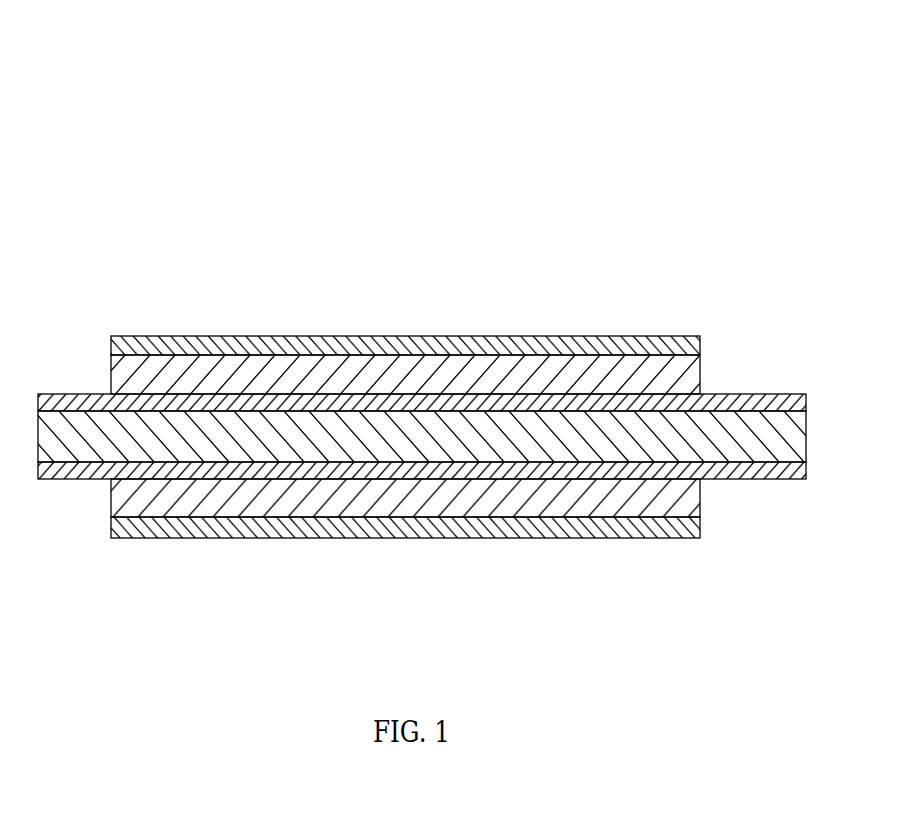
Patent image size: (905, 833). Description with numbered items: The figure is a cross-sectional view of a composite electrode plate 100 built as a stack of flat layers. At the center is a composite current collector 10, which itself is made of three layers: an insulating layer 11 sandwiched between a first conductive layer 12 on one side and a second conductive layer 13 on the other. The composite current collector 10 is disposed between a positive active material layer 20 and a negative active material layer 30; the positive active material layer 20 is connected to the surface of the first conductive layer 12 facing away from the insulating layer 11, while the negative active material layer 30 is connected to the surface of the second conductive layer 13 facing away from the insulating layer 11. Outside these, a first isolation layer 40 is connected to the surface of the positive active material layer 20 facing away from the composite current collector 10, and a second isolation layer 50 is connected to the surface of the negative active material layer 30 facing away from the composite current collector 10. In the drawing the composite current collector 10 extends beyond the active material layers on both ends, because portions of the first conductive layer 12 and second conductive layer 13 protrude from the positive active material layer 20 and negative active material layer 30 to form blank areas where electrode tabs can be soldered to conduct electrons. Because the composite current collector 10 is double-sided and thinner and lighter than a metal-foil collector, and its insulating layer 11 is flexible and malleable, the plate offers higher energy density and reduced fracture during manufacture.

The composite electrode plate 100 is at (226, 79).
The composite current collector 10 is at (422, 526).
The insulating layer 11 is at (241, 437).
The first conductive layer 12 is at (177, 403).
The second conductive layer 13 is at (125, 603).
The positive active material layer 20 is at (660, 377).
The negative active material layer 30 is at (587, 503).
The first isolation layer 40 is at (580, 343).
The second isolation layer 50 is at (482, 525).